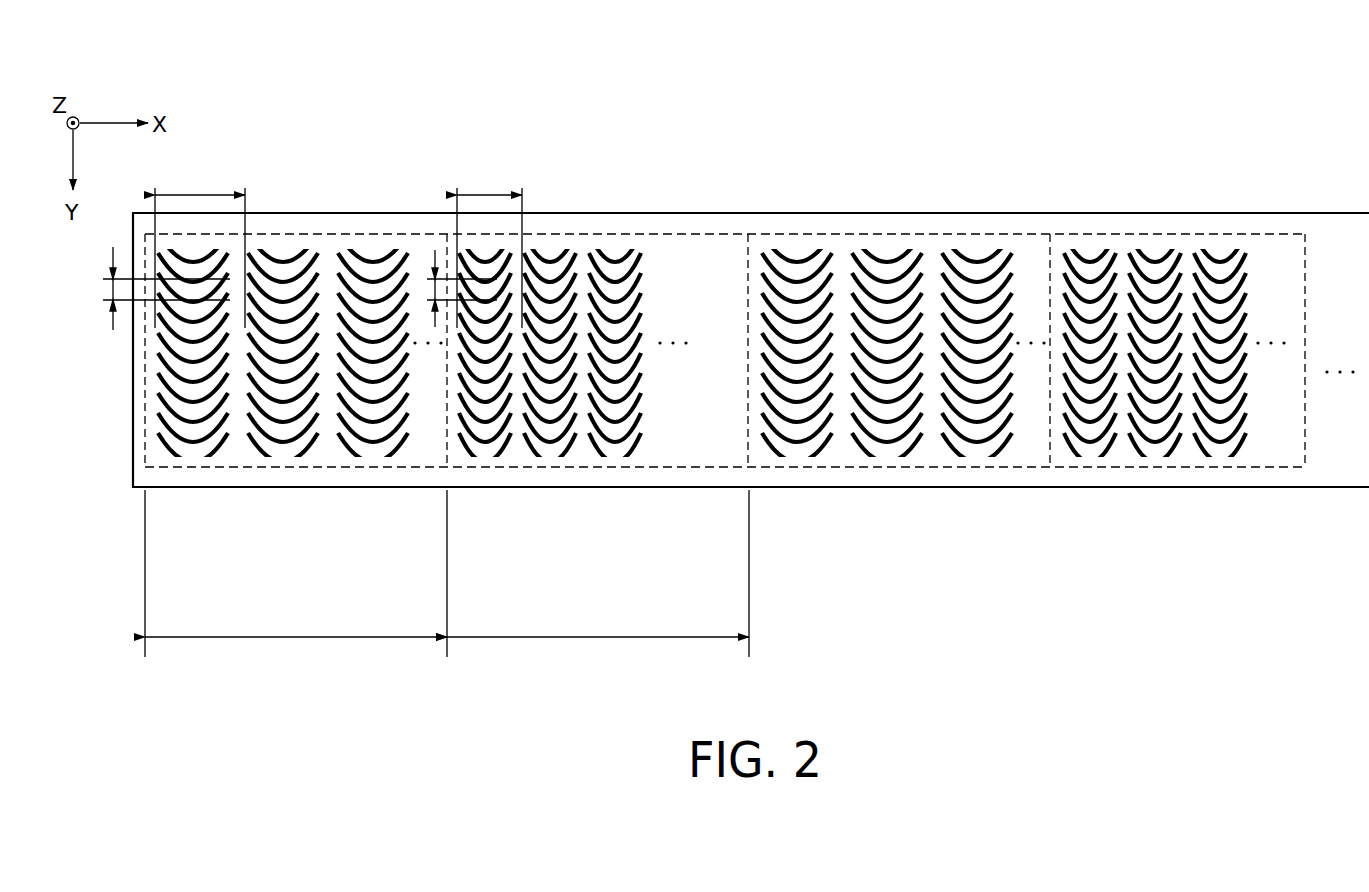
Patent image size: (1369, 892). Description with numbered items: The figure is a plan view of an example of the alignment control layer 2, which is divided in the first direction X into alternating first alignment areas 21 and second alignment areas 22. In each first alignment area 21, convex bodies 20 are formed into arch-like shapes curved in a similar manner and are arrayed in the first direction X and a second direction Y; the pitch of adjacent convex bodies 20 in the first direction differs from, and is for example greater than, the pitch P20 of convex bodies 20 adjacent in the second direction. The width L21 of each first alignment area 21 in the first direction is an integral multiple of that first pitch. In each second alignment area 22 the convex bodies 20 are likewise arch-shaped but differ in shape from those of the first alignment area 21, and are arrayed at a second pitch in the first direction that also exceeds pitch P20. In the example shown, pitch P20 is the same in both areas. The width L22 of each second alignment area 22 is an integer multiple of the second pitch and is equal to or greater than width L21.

The alignment control layer 2 is at (1311, 213).
The convex bodies 20 is at (290, 417).
The first alignment area 21 is at (433, 467).
The second alignment area 22 is at (703, 467).
The pitch P20 is at (108, 290).
The width L21 is at (296, 583).
The width L22 is at (598, 583).